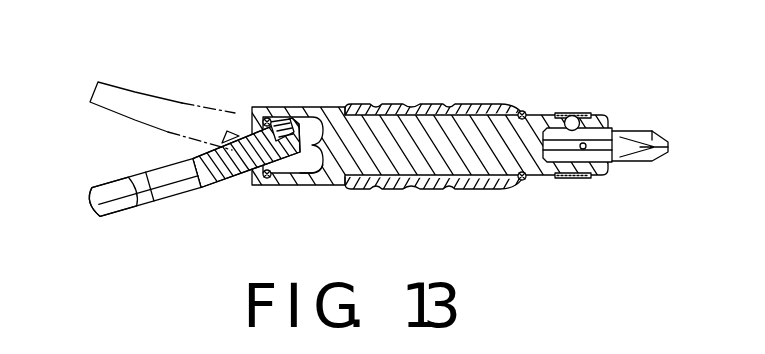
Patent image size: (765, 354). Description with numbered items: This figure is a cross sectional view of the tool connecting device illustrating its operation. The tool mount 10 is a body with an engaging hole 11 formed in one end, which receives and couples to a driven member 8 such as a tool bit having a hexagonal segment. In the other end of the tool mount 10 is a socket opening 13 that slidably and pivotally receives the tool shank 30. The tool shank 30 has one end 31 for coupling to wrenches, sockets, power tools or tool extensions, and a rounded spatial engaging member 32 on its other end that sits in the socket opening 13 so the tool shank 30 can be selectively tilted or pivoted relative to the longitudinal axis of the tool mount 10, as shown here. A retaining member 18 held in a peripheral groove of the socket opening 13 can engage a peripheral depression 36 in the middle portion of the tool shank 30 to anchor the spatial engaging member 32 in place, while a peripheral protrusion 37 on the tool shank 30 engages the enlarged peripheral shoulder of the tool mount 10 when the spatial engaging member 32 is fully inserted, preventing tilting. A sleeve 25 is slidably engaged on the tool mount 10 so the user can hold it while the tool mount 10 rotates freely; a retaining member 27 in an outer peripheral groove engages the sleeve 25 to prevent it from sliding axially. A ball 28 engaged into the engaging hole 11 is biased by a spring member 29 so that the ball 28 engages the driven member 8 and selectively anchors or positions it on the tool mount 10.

The driven member 8 is at (630, 150).
The tool mount 10 is at (398, 137).
The engaging hole 11 is at (578, 161).
The socket opening 13 is at (313, 130).
The retaining member 18 is at (270, 183).
The sleeve 25 is at (432, 189).
The retaining member 27 is at (520, 113).
The ball 28 is at (585, 116).
The spring member 29 is at (571, 116).
The tool shank 30 is at (170, 173).
The end 31 is at (110, 216).
The spatial engaging member 32 is at (310, 183).
The peripheral depression 36 is at (250, 140).
The peripheral protrusion 37 is at (247, 180).